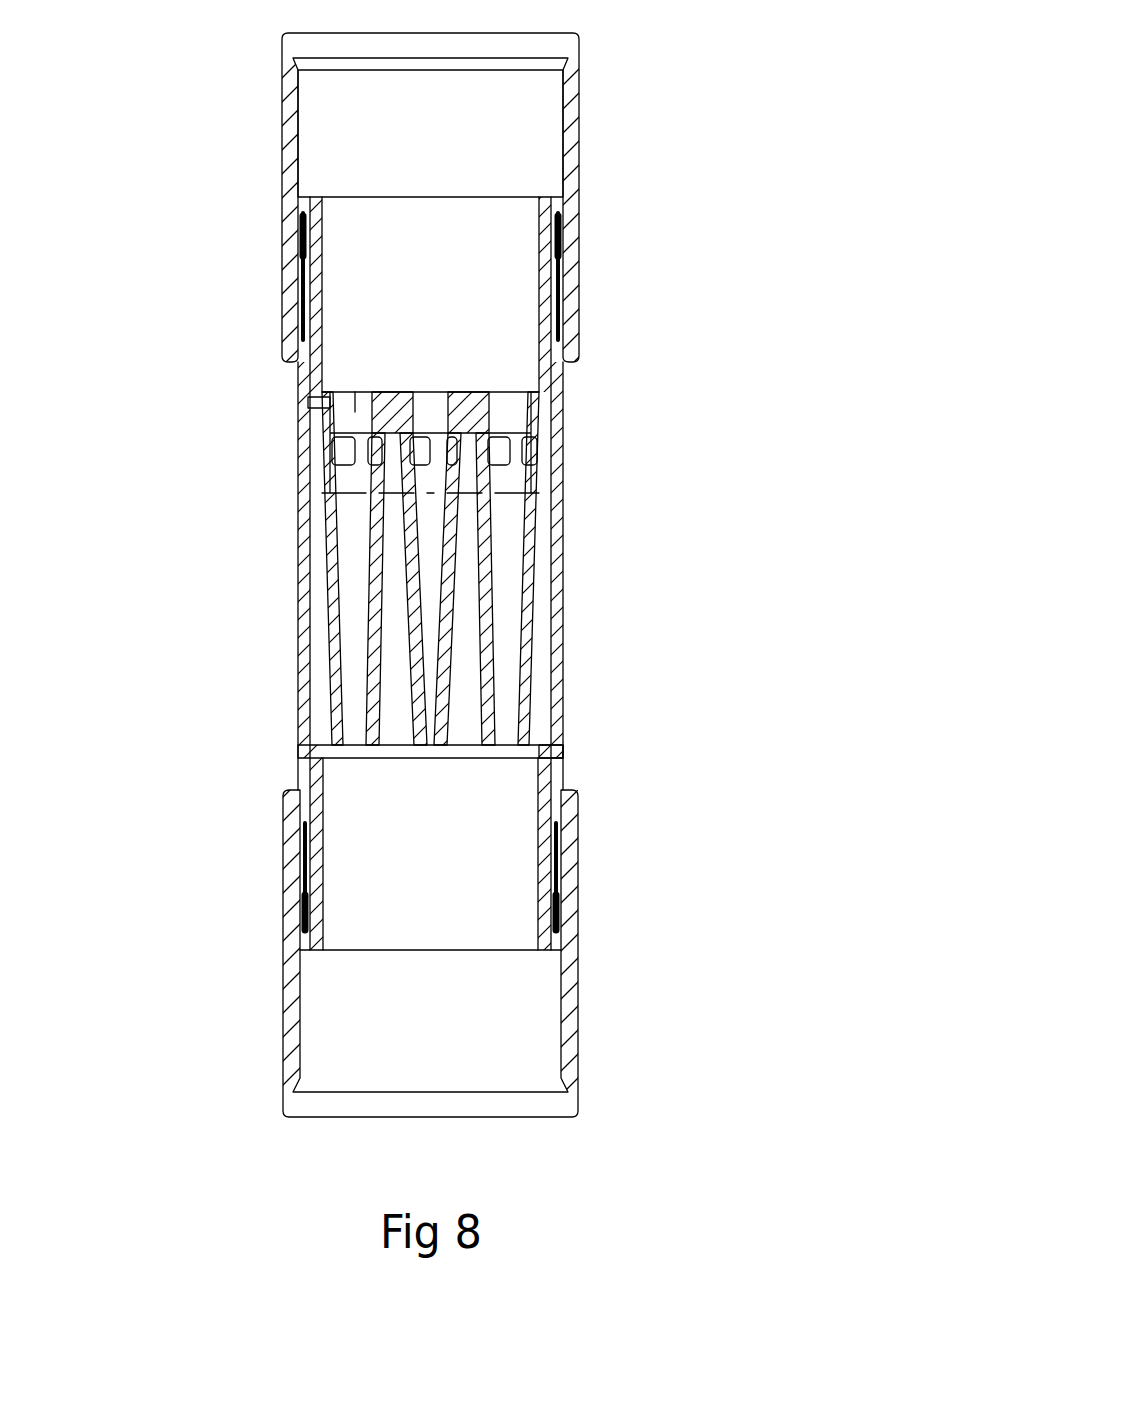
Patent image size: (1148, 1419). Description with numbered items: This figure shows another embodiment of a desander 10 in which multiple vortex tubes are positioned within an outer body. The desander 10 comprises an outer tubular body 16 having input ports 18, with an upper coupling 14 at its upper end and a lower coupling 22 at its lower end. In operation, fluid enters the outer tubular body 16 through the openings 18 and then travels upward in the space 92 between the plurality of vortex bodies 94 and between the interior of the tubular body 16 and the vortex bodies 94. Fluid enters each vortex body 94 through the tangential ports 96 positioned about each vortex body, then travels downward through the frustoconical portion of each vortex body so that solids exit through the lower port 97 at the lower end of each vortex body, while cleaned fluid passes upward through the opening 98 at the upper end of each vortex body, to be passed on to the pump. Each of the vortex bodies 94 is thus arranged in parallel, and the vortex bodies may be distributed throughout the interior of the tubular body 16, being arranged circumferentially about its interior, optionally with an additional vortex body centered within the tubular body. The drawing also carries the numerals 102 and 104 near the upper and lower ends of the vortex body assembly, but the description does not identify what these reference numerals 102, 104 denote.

The desander 10 is at (504, 575).
The upper coupling 14 is at (565, 165).
The outer tubular body 16 is at (558, 505).
The input ports 18 is at (557, 703).
The lower coupling 22 is at (578, 990).
The space 92 is at (318, 548).
The vortex bodies 94 is at (335, 657).
The tangential ports 96 is at (340, 448).
The lower port 97 is at (522, 762).
The opening 98 is at (355, 412).
The tab 102 is at (330, 407).
The base plate 104 is at (325, 748).